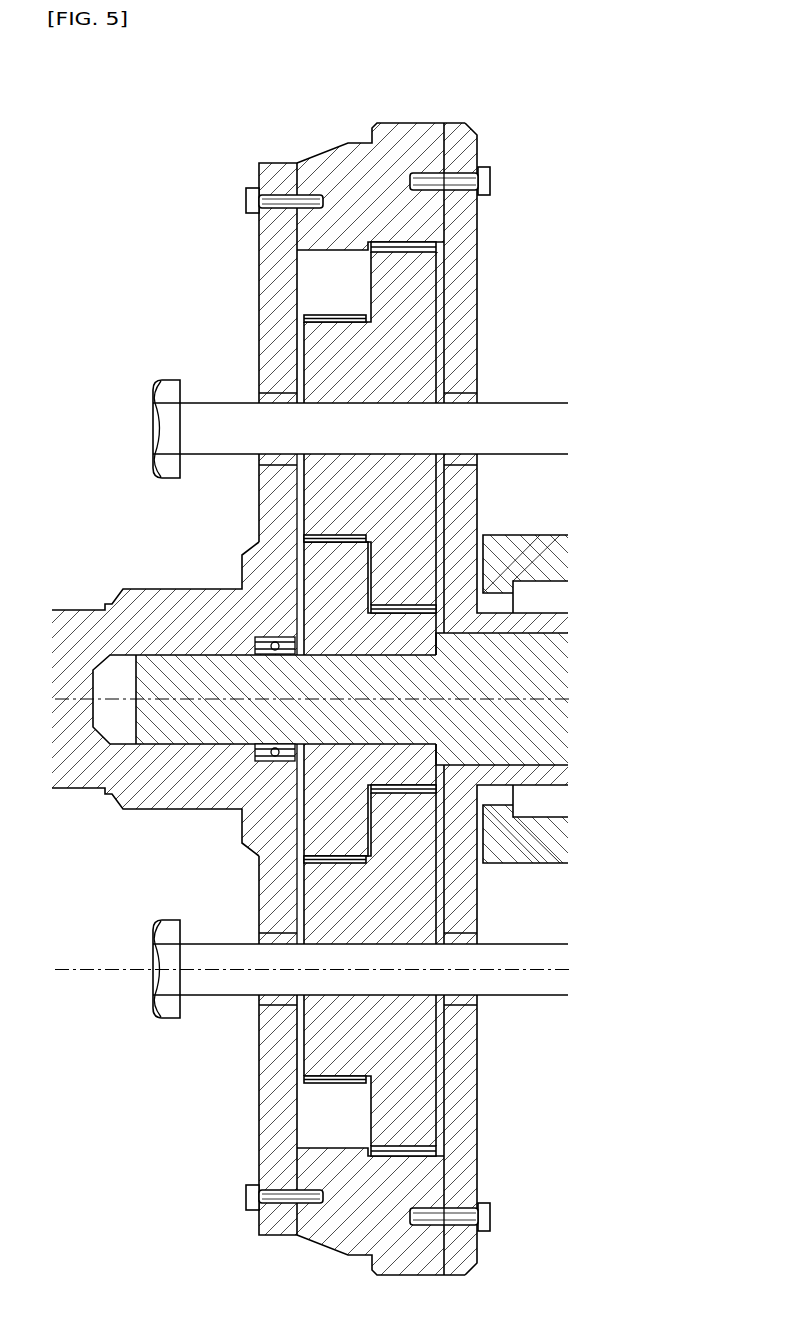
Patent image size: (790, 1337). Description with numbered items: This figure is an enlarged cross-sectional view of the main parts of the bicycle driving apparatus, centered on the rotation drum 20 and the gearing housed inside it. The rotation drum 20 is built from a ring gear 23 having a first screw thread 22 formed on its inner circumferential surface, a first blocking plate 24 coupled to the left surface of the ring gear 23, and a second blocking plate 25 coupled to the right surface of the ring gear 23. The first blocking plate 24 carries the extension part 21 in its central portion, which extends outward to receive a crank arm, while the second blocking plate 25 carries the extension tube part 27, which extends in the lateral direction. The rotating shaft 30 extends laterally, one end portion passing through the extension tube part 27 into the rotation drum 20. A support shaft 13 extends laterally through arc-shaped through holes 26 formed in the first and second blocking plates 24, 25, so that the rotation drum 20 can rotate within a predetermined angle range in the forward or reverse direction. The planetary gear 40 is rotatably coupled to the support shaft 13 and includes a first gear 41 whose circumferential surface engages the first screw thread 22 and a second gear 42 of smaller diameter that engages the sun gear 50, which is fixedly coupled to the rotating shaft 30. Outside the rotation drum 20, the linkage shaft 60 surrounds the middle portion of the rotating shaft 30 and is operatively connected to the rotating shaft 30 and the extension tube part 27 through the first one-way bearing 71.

The support shaft 13 is at (152, 418).
The rotation drum 20 is at (498, 147).
The extension part 21 is at (143, 588).
The first screw thread 22 is at (415, 292).
The ring gear 23 is at (330, 145).
The first blocking plate 24 is at (258, 307).
The second blocking plate 25 is at (470, 1143).
The arc-shaped through hole 26 is at (272, 397).
The extension tube part 27 is at (540, 790).
The rotating shaft 30 is at (565, 600).
The planetary gear 40 is at (444, 336).
The first gear 41 is at (430, 246).
The second gear 42 is at (340, 313).
The sun gear 50 is at (300, 813).
The linkage shaft 60 is at (537, 535).
The first one-way bearing 71 is at (557, 557).